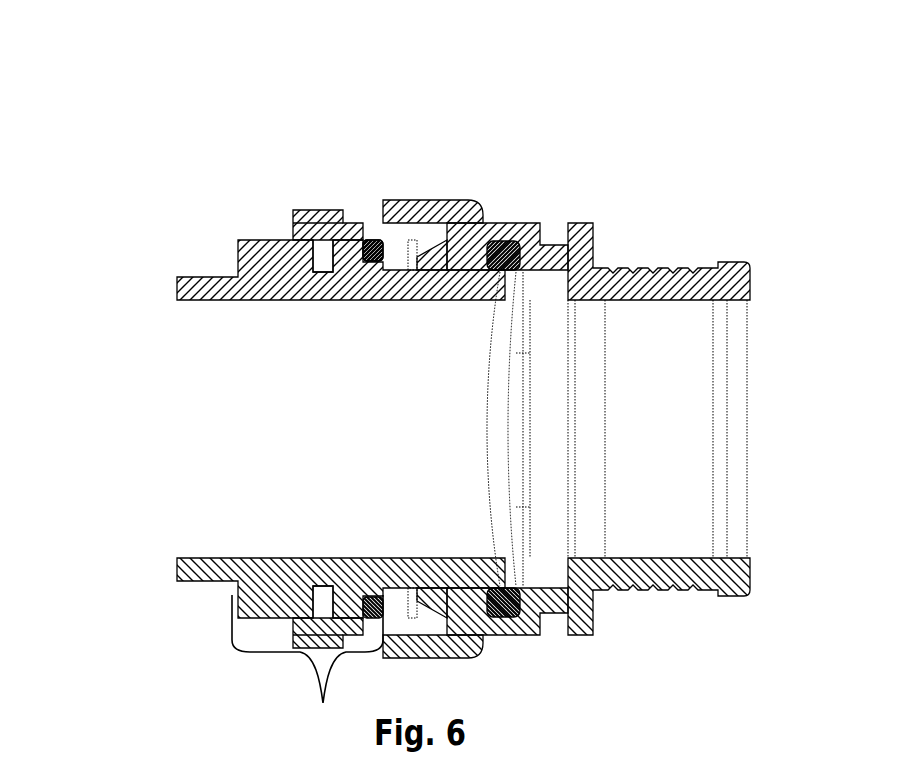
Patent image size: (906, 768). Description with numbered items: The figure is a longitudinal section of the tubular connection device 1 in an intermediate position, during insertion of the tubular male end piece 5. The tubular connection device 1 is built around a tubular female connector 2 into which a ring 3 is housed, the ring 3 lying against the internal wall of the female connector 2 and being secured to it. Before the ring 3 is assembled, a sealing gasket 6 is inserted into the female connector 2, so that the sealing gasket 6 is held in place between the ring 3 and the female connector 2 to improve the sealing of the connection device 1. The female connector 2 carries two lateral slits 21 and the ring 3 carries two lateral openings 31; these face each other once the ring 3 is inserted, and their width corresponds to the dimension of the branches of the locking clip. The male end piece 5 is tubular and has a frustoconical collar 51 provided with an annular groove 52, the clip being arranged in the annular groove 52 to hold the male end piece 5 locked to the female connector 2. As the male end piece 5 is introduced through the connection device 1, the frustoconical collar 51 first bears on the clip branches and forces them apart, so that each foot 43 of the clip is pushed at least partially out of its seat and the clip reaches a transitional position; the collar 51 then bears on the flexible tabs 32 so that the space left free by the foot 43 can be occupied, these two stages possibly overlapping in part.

The tubular connection device 1 is at (393, 177).
The tubular female connector 2 is at (693, 272).
The ring 3 is at (465, 617).
The tubular male end piece 5 is at (258, 470).
The sealing gasket 6 is at (527, 615).
The lateral slit 21 is at (371, 234).
The lateral opening 31 is at (373, 250).
The flexible tab 32 is at (393, 245).
The foot 43 is at (362, 243).
The frustoconical collar 51 is at (307, 662).
The annular groove 52 is at (323, 258).